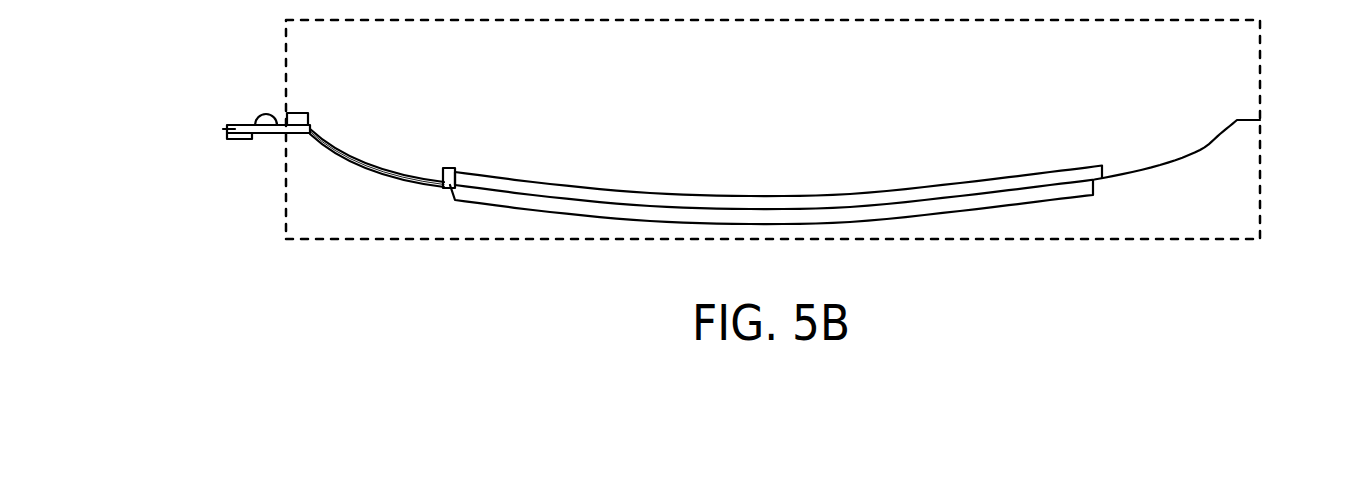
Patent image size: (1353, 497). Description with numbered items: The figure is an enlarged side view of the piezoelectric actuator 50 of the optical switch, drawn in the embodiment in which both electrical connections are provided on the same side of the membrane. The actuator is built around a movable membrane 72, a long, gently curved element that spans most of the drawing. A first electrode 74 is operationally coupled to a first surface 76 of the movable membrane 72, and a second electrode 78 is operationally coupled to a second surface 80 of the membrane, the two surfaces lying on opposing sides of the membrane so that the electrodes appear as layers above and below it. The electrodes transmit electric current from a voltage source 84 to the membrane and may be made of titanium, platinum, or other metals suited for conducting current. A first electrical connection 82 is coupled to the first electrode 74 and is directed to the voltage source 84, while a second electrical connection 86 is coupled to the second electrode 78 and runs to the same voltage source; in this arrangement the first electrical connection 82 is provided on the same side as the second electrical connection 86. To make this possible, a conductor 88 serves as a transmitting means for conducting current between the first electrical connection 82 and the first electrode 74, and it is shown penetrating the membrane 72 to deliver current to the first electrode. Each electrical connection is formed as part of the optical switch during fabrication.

The piezoelectric actuator 50 is at (1250, 60).
The movable membrane 72 is at (298, 112).
The first electrode 74 is at (997, 178).
The first surface 76 is at (1156, 163).
The second electrode 78 is at (998, 214).
The second surface 80 is at (1143, 176).
The first electrical connection 82 is at (257, 137).
The voltage source 84 is at (220, 123).
The second electrical connection 86 is at (302, 137).
The conductor 88 is at (452, 168).